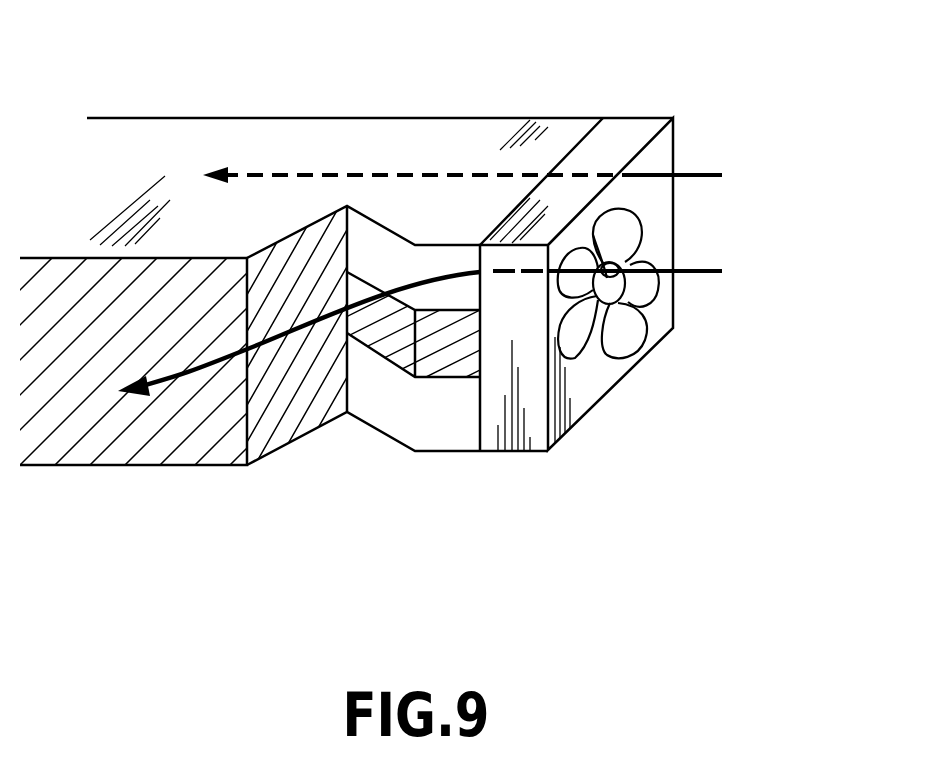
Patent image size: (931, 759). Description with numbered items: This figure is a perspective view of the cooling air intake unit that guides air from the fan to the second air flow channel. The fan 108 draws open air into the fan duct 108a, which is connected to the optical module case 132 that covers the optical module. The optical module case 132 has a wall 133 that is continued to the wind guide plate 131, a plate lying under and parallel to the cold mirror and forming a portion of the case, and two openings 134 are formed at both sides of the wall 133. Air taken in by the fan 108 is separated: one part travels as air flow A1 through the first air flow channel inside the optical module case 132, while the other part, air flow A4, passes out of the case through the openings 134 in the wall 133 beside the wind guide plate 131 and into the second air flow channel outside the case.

The fan 108 is at (635, 327).
The fan duct 108a is at (623, 133).
The wind guide plate 131 is at (278, 425).
The optical module case 132 is at (153, 150).
The wall 133 is at (455, 365).
The openings 134 is at (375, 245).
The air flow A1 is at (544, 176).
The air flow A4 is at (446, 327).